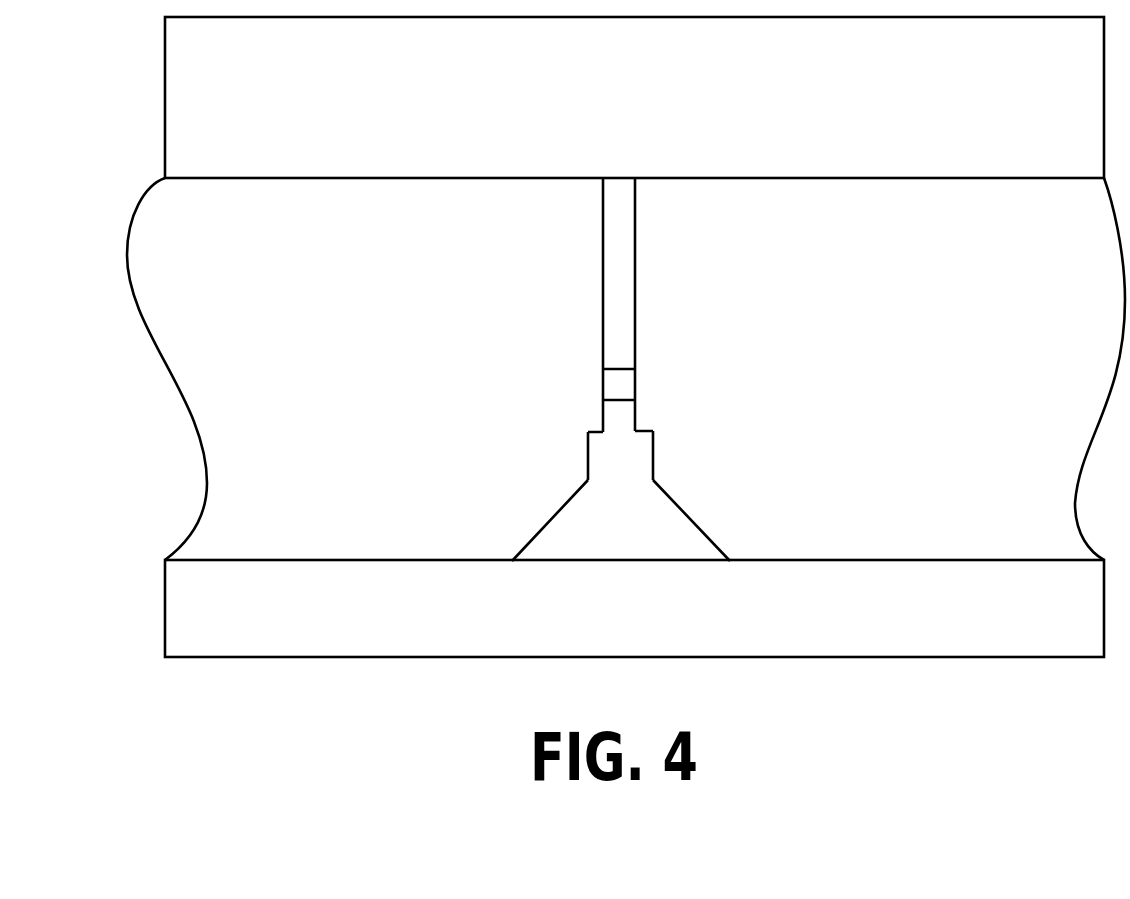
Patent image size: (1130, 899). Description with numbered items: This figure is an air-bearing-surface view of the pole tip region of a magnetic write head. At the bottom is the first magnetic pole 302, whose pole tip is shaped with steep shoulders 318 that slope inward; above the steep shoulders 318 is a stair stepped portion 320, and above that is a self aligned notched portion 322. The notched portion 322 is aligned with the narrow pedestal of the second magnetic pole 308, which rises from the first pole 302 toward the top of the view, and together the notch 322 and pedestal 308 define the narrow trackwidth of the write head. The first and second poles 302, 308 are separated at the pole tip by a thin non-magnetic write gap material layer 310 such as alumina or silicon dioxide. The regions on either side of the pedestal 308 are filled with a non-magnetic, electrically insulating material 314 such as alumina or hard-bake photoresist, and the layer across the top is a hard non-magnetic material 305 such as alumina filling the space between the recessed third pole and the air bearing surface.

The first magnetic pole 302 is at (688, 575).
The hard non-magnetic material 305 is at (703, 102).
The second magnetic pole 308 is at (620, 258).
The write gap material layer 310 is at (622, 387).
The non-magnetic electrically insulating material 314 is at (322, 300).
The steep shoulders 318 is at (680, 505).
The stair stepped portion 320 is at (653, 455).
The self aligned notched portion 322 is at (637, 413).